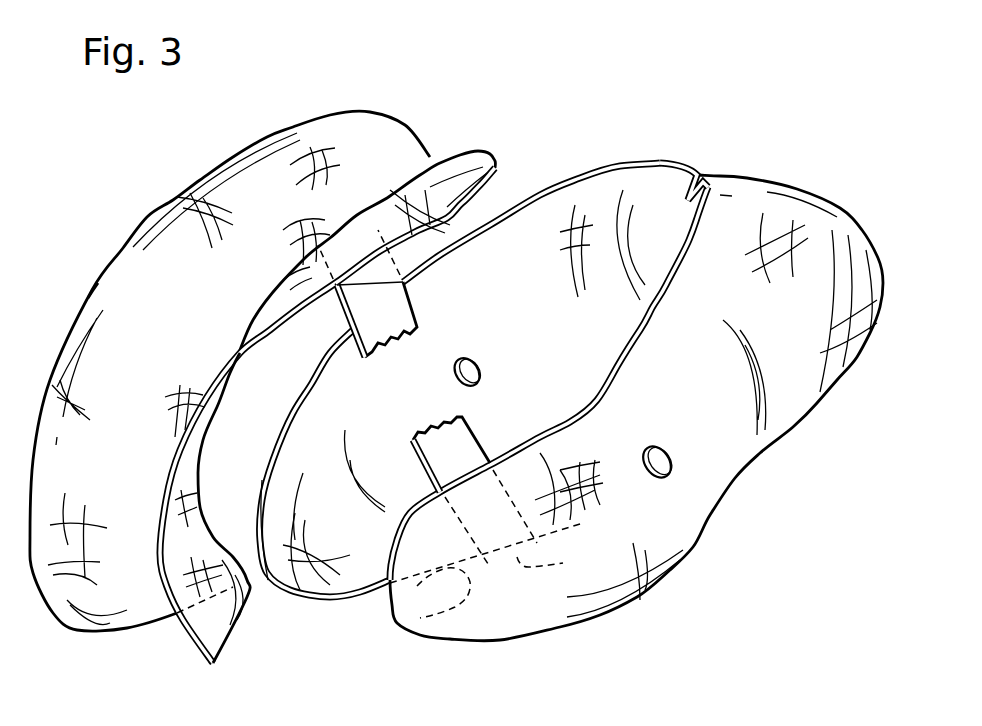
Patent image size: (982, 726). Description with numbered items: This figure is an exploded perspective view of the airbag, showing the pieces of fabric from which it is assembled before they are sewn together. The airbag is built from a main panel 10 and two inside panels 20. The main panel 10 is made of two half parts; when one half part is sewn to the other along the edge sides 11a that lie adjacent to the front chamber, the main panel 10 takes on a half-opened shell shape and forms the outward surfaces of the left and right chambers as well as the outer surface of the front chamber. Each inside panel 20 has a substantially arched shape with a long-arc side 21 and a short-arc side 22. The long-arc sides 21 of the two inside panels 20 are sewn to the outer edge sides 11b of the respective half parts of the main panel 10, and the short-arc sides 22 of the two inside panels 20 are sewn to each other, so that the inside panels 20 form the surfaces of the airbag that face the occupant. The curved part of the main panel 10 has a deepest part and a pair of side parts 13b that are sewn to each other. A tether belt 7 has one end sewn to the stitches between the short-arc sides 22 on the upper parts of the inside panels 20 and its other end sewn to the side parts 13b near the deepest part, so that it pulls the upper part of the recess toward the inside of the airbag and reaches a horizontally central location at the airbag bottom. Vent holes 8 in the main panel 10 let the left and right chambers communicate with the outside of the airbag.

The main panel 10 is at (616, 152).
The edge side 11a is at (722, 173).
The outer edge side 11b is at (294, 412).
The tether belt 7 is at (403, 308).
The vent hole 8 is at (478, 370).
The side part 13b is at (557, 556).
The inside panel 20 is at (295, 113).
The long-arc side 21 is at (93, 290).
The short-arc side 22 is at (288, 279).